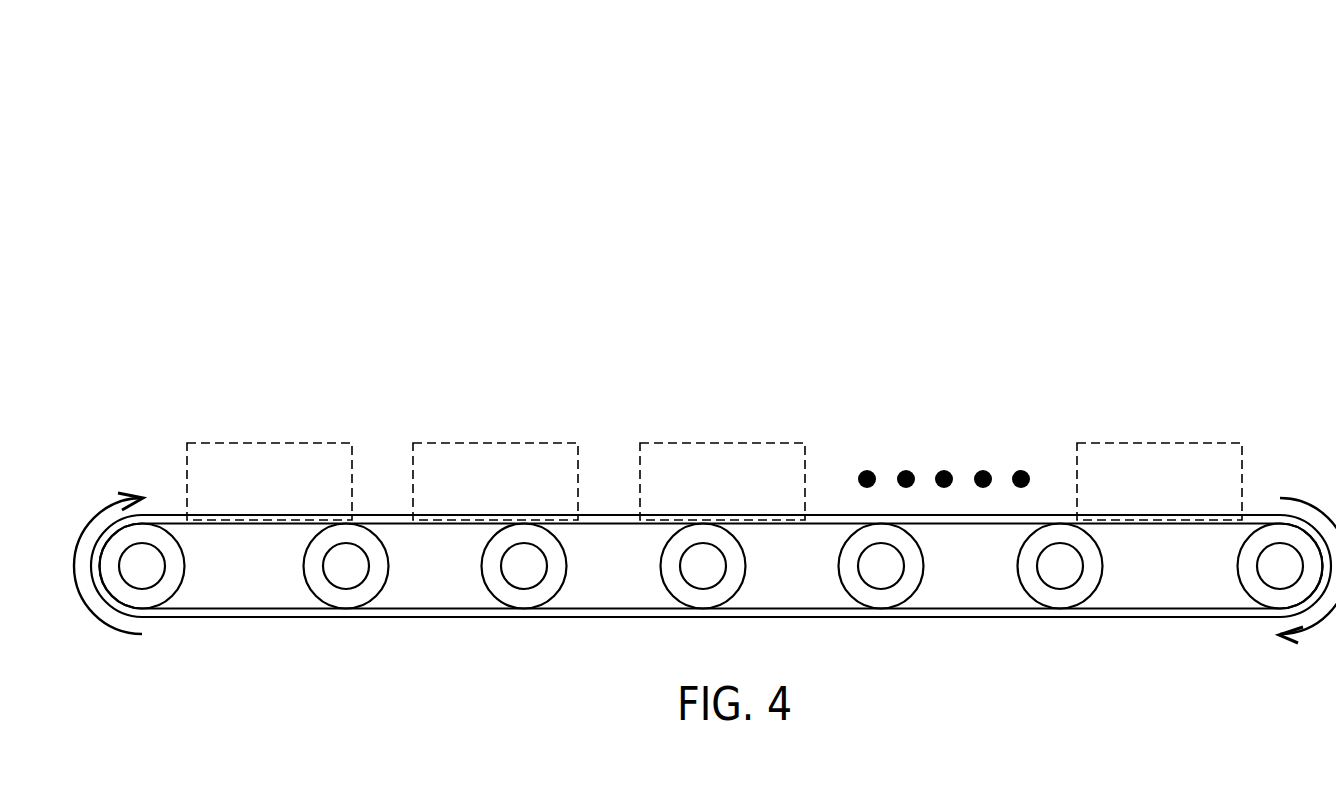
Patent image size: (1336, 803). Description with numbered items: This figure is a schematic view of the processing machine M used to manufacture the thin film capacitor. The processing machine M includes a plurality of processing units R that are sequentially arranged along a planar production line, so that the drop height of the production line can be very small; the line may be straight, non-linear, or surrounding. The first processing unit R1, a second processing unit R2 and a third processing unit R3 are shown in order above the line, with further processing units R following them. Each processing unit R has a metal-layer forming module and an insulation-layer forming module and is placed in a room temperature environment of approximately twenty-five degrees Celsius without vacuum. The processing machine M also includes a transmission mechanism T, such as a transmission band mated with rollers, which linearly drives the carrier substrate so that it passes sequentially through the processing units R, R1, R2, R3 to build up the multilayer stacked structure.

The processing machine M is at (154, 238).
The transmission mechanism T is at (240, 630).
The processing unit R is at (1160, 442).
The first processing unit R1 is at (269, 442).
The second processing unit R2 is at (496, 442).
The third processing unit R3 is at (723, 442).